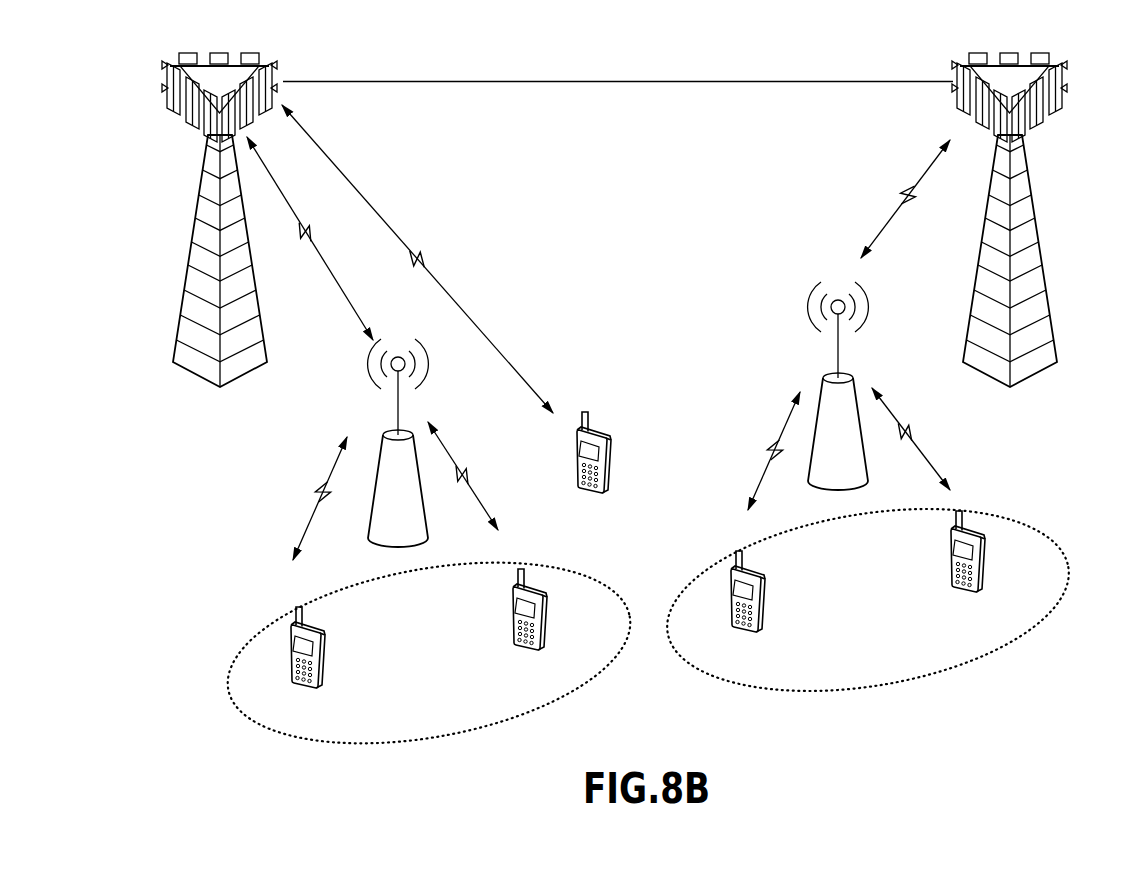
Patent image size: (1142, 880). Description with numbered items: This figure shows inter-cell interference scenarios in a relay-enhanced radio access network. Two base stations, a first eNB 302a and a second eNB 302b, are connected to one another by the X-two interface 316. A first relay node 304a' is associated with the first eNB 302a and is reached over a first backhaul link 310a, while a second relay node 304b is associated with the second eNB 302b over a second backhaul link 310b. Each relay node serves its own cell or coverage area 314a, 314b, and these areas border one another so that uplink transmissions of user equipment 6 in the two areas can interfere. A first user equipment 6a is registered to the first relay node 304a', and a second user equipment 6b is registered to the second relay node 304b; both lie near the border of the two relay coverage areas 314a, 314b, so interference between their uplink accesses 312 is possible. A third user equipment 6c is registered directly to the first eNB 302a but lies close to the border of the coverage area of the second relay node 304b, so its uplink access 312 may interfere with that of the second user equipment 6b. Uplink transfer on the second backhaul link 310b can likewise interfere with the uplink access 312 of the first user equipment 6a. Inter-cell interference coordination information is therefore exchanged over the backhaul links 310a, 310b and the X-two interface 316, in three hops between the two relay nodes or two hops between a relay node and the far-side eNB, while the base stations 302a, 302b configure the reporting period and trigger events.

The first eNB 302a is at (268, 67).
The second eNB 302b is at (1058, 67).
The first relay node 304a' is at (367, 457).
The second relay node 304b is at (823, 378).
The backhaul link 1 310a is at (322, 263).
The backhaul link 2 310b is at (905, 194).
The uplink access 312 is at (472, 322).
The relay cell coverage area 314a is at (270, 628).
The relay cell coverage area 314b is at (710, 570).
The X2 interface 316 is at (750, 81).
The user equipment 6 is at (332, 650).
The first user equipment 6a is at (513, 606).
The second user equipment 6b is at (770, 592).
The third user equipment 6c is at (577, 462).